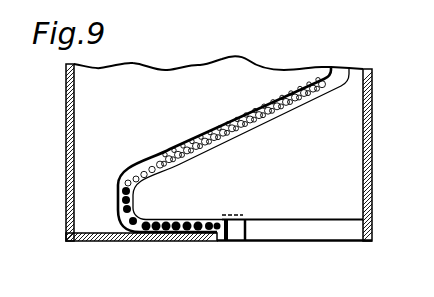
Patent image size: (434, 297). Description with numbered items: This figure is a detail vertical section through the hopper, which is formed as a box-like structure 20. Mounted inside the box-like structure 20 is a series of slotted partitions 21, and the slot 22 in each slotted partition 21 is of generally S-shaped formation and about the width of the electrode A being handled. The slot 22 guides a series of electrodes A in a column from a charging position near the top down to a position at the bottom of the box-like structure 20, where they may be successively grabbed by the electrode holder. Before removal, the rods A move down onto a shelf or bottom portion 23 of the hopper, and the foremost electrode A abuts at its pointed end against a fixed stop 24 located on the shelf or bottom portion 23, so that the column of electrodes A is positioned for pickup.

The box-like structure 20 is at (66, 130).
The slotted partition 21 is at (240, 77).
The slot 22 is at (282, 112).
The shelf or bottom portion 23 is at (197, 243).
The electrode A is at (220, 243).
The fixed stop 24 is at (244, 229).